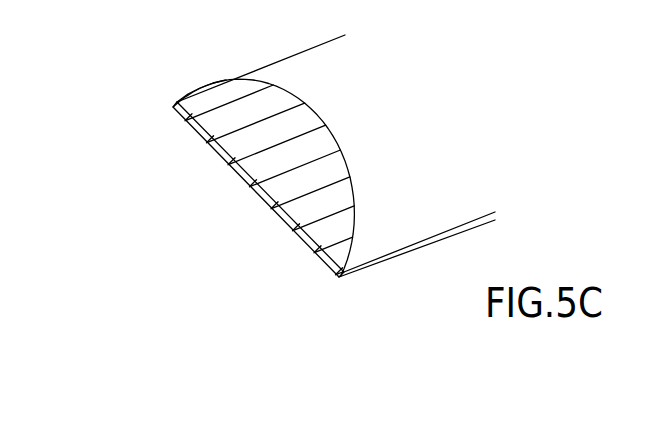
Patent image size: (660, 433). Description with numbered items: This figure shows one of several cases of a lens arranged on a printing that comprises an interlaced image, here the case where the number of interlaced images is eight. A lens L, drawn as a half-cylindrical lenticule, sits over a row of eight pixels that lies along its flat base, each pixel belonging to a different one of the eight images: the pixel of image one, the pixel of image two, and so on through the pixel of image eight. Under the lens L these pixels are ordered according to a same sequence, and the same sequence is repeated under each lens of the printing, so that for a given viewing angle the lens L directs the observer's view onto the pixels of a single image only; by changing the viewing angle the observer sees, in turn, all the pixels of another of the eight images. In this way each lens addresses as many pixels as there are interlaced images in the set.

The lens L is at (308, 72).